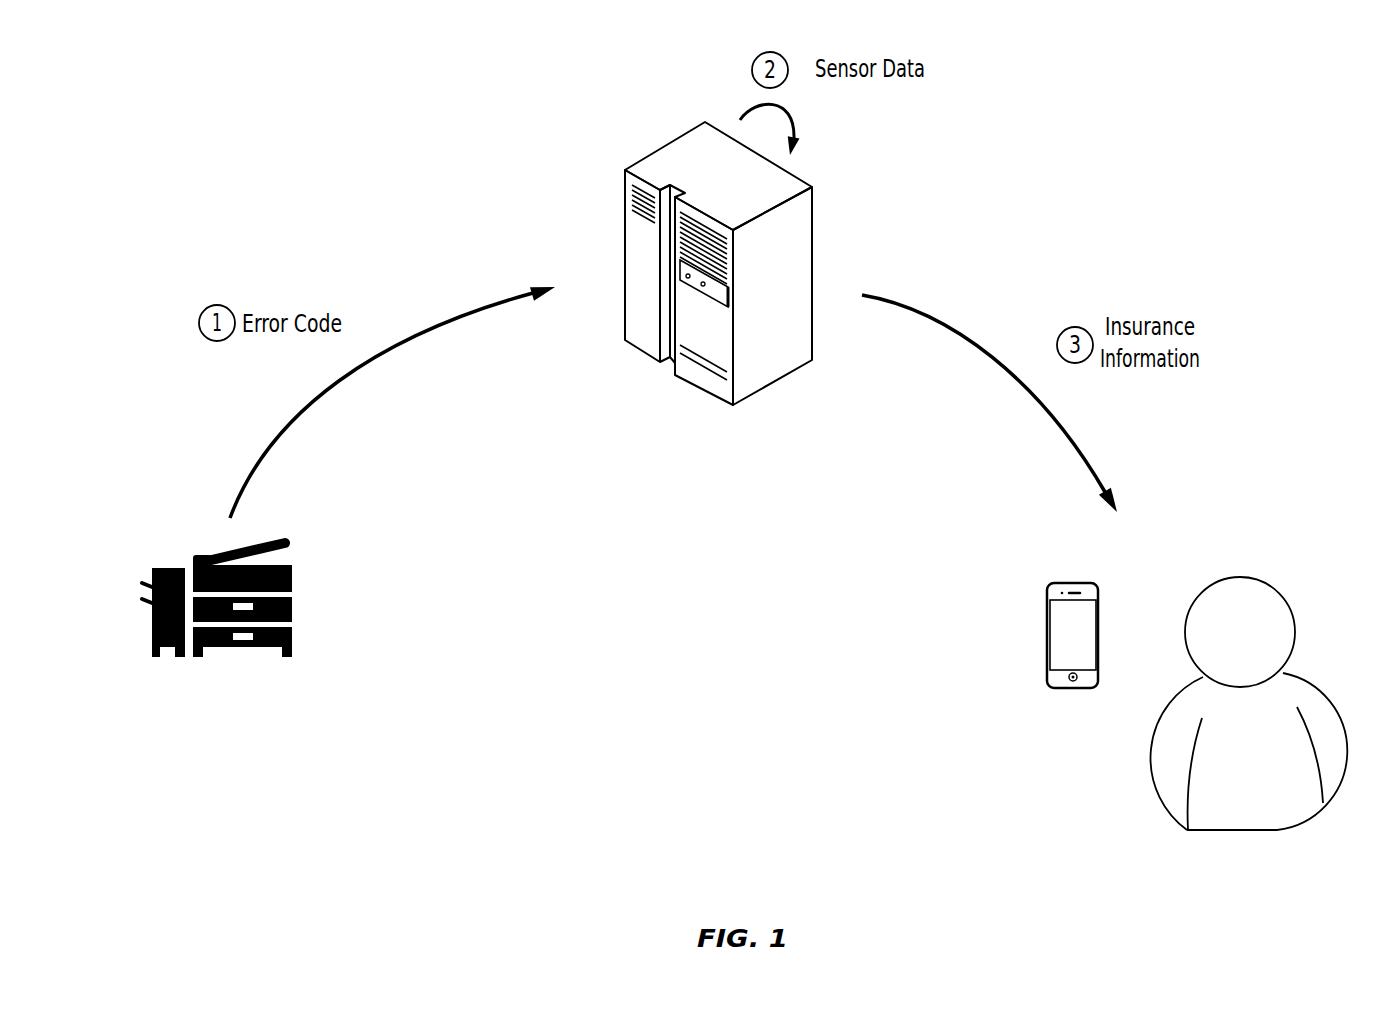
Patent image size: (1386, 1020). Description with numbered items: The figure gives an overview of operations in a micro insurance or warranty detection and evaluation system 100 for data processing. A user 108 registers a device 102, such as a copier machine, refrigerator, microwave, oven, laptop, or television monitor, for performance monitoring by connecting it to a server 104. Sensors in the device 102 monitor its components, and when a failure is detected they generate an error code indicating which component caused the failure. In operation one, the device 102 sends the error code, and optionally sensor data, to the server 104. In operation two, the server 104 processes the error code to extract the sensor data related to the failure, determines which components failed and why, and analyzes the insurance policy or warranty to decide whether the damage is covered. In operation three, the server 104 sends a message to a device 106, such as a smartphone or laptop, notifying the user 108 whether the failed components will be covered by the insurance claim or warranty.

The micro insurance or warranty detection and evaluation system 100 is at (227, 132).
The device 102 is at (211, 778).
The server 104 is at (648, 431).
The device 106 is at (1089, 583).
The user 108 is at (1187, 830).